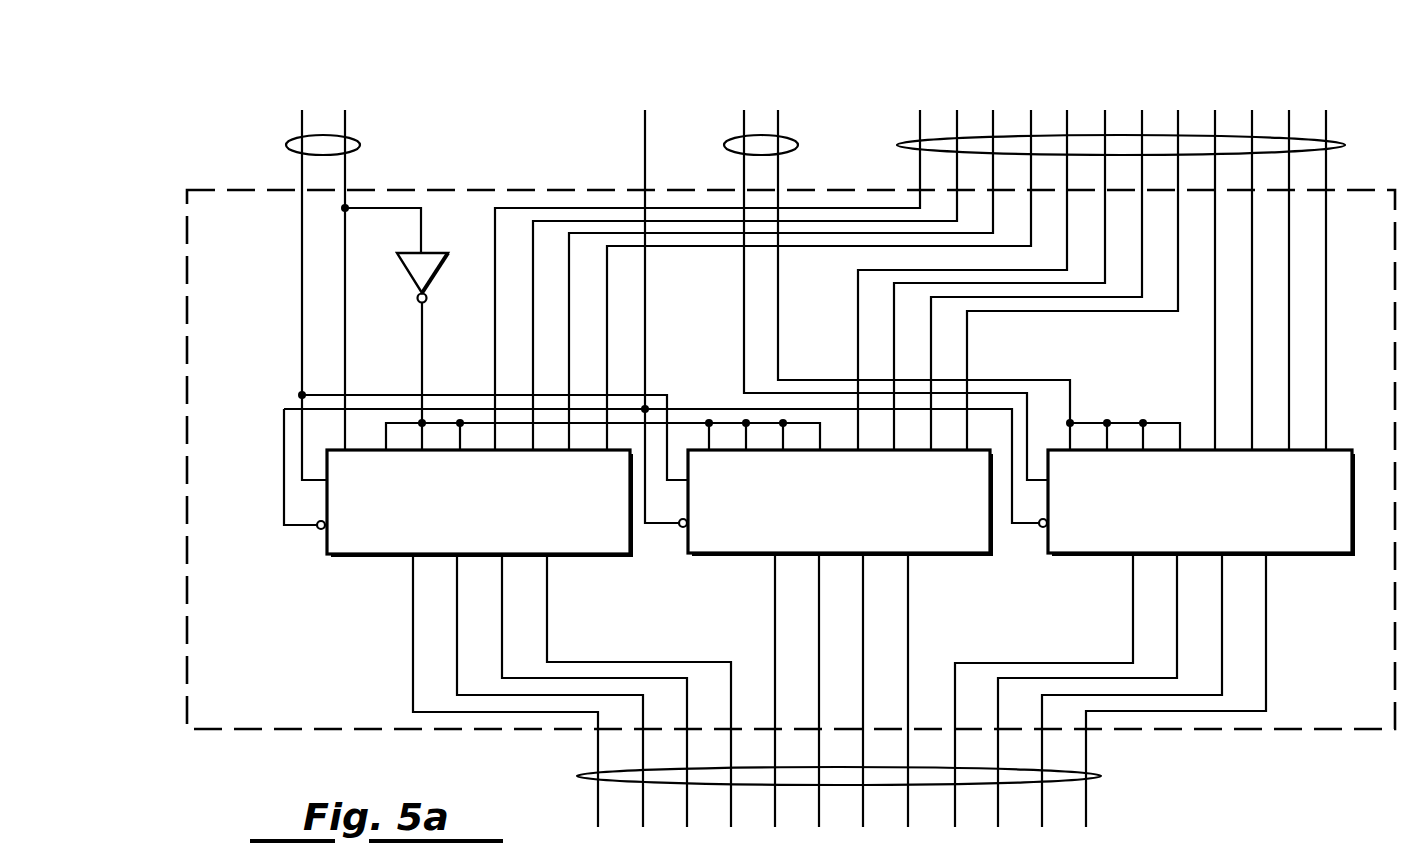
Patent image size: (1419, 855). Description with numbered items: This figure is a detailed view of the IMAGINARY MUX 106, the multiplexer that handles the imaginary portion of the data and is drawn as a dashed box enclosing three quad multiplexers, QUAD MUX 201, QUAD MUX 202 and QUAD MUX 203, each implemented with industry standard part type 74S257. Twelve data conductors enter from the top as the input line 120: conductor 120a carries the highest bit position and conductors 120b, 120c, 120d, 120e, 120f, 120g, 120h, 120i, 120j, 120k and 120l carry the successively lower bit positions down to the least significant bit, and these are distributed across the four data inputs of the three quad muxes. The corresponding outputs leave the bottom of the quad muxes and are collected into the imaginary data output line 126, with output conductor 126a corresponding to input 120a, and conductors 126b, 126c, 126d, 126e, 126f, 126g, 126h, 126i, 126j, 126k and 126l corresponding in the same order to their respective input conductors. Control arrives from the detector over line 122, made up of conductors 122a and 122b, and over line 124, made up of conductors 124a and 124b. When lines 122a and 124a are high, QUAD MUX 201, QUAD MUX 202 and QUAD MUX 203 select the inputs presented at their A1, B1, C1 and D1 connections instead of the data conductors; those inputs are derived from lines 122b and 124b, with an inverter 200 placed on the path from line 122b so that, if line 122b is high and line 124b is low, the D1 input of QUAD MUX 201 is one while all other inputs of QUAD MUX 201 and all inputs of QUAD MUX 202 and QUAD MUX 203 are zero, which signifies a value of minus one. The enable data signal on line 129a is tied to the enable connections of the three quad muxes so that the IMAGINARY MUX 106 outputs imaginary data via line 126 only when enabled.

The IMAGINARY MUX 106 is at (263, 732).
The input line 120 is at (1345, 145).
The input conductor 120a is at (495, 339).
The input conductor 120b is at (533, 367).
The input conductor 120c is at (569, 335).
The input conductor 120d is at (607, 363).
The input conductor 120e is at (858, 339).
The input conductor 120f is at (894, 367).
The input conductor 120g is at (931, 335).
The input conductor 120h is at (967, 363).
The input conductor 120i is at (1215, 335).
The input conductor 120j is at (1252, 367).
The input conductor 120k is at (1289, 335).
The input conductor 120l is at (1326, 363).
The control line 122 is at (360, 145).
The select control line 122a is at (302, 171).
The sign data line 122b is at (345, 170).
The control line 124 is at (798, 145).
The select control line 124a is at (744, 171).
The sign data line 124b is at (778, 170).
The imaginary data output line 126 is at (1101, 776).
The output conductor 126a is at (413, 621).
The output conductor 126b is at (457, 651).
The output conductor 126c is at (502, 620).
The output conductor 126d is at (547, 647).
The output conductor 126e is at (775, 620).
The output conductor 126f is at (819, 651).
The output conductor 126g is at (863, 620).
The output conductor 126h is at (908, 647).
The output conductor 126i is at (1133, 620).
The output conductor 126j is at (1177, 651).
The output conductor 126k is at (1222, 620).
The output conductor 126l is at (1266, 647).
The enable data line 129a is at (645, 128).
The inverter 200 is at (401, 262).
The QUAD MUX 201 is at (352, 557).
The QUAD MUX 202 is at (712, 556).
The QUAD MUX 203 is at (1064, 556).